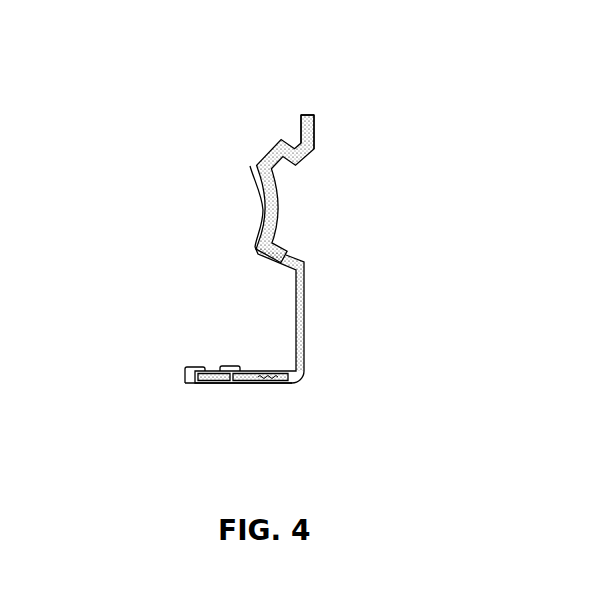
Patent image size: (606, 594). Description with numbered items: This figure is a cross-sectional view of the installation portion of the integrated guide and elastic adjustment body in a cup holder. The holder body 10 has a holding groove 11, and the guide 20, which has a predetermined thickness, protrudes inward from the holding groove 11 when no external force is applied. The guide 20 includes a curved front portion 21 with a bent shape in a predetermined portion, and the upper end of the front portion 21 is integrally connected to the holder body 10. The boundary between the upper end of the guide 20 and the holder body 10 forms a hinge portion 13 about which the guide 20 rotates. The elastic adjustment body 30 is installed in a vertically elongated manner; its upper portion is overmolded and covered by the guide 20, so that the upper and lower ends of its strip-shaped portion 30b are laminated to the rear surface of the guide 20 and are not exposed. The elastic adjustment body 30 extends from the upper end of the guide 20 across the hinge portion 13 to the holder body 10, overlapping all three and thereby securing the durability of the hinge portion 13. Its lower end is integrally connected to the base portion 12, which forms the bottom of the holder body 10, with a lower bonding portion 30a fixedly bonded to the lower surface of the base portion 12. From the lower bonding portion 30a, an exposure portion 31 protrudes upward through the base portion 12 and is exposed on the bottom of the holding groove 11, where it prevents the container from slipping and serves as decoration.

The holder body 10 is at (290, 100).
The holding groove 11 is at (213, 230).
The base portion 12 is at (257, 370).
The hinge portion 13 is at (302, 140).
The guide 20 is at (314, 176).
The front portion 21 is at (279, 176).
The elastic adjustment body 30 is at (304, 317).
The lower bonding portion 30a is at (244, 384).
The strip-shaped portion 30b is at (250, 197).
The exposure portion 31 is at (223, 366).